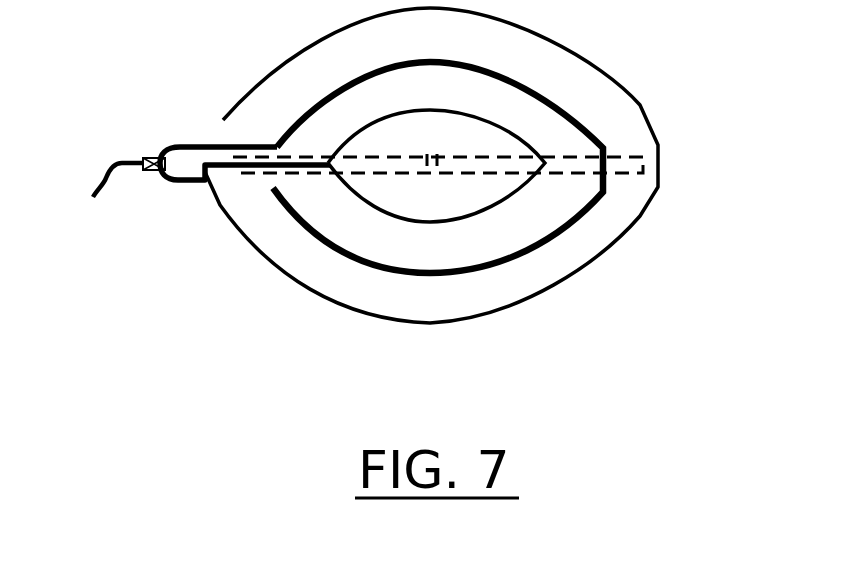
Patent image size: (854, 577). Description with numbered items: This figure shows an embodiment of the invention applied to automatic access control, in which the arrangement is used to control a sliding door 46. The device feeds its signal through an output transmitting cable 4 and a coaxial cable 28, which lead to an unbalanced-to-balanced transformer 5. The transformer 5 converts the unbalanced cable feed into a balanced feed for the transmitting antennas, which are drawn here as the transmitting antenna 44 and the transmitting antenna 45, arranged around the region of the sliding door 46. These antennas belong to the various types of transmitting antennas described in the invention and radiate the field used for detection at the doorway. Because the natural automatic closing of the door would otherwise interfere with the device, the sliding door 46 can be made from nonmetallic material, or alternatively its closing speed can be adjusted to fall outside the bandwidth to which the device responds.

The output transmitting cable 4 is at (177, 143).
The coaxial cable 28 is at (115, 160).
The unbalanced-to-balanced transformer 5 is at (152, 170).
The transmitting antenna 44 is at (293, 218).
The transmitting antenna 45 is at (512, 200).
The sliding door 46 is at (630, 158).